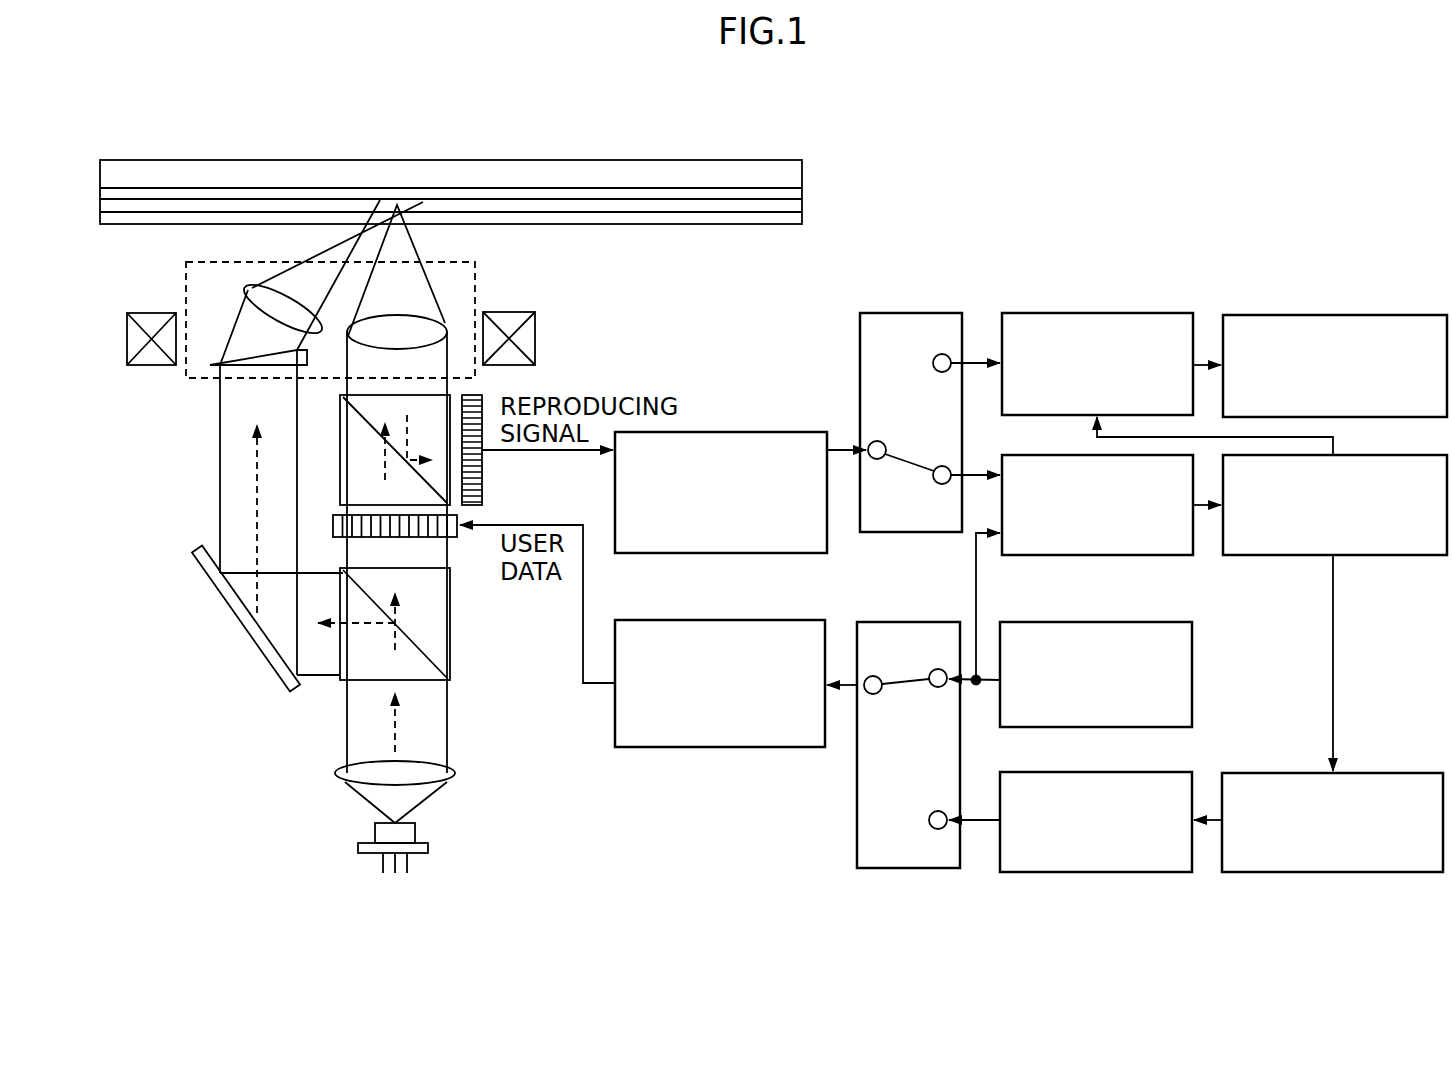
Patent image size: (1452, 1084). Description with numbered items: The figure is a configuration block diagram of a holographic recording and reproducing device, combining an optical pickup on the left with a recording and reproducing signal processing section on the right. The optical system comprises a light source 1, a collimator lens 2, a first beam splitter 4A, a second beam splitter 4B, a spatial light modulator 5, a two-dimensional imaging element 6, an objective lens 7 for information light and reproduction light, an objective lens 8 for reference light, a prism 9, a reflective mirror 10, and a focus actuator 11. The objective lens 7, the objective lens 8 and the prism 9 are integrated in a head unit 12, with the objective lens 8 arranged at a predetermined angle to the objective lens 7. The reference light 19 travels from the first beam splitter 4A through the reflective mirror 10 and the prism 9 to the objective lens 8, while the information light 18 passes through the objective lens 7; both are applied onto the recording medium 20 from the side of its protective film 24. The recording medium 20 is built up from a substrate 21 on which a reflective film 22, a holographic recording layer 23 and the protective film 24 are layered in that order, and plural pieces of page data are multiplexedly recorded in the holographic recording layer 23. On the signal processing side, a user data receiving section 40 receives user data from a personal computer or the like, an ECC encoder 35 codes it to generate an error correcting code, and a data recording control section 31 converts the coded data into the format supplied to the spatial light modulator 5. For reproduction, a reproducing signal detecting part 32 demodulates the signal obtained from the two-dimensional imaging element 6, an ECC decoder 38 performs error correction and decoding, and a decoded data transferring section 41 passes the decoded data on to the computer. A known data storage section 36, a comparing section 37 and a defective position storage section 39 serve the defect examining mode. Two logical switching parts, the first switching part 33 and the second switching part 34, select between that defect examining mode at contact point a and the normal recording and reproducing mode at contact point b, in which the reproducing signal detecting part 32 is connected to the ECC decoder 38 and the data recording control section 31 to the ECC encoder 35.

The light source 1 is at (410, 835).
The collimator lens 2 is at (457, 773).
The first beam splitter 4A is at (433, 645).
The second beam splitter 4B is at (340, 437).
The spatial light modulator 5 is at (433, 540).
The two-dimensional imaging element 6 is at (482, 472).
The objective lens for information light and reproduction light 7 is at (402, 328).
The objective lens for reference light 8 is at (252, 290).
The prism 9 is at (250, 367).
The reflective mirror 10 is at (273, 673).
The focus actuator 11 is at (535, 330).
The head unit 12 is at (185, 275).
The information recording light 18 is at (437, 312).
The recording reference light 19 is at (257, 487).
The recording medium 20 is at (308, 160).
The substrate 21 is at (802, 173).
The reflective film 22 is at (802, 195).
The holographic recording layer 23 is at (802, 207).
The protective film 24 is at (802, 218).
The data recording control section 31 is at (775, 620).
The reproducing signal detecting part 32 is at (762, 432).
The switching part SW1 33 is at (915, 622).
The switching part SW2 34 is at (935, 313).
The ECC encoder 35 is at (1180, 772).
The known data storage section 36 is at (1138, 622).
The comparing section 37 is at (1008, 557).
The ECC decoder 38 is at (1172, 313).
The defective position storage section 39 is at (1417, 555).
The user data receiving section 40 is at (1392, 773).
The decoded data transferring section 41 is at (1390, 315).